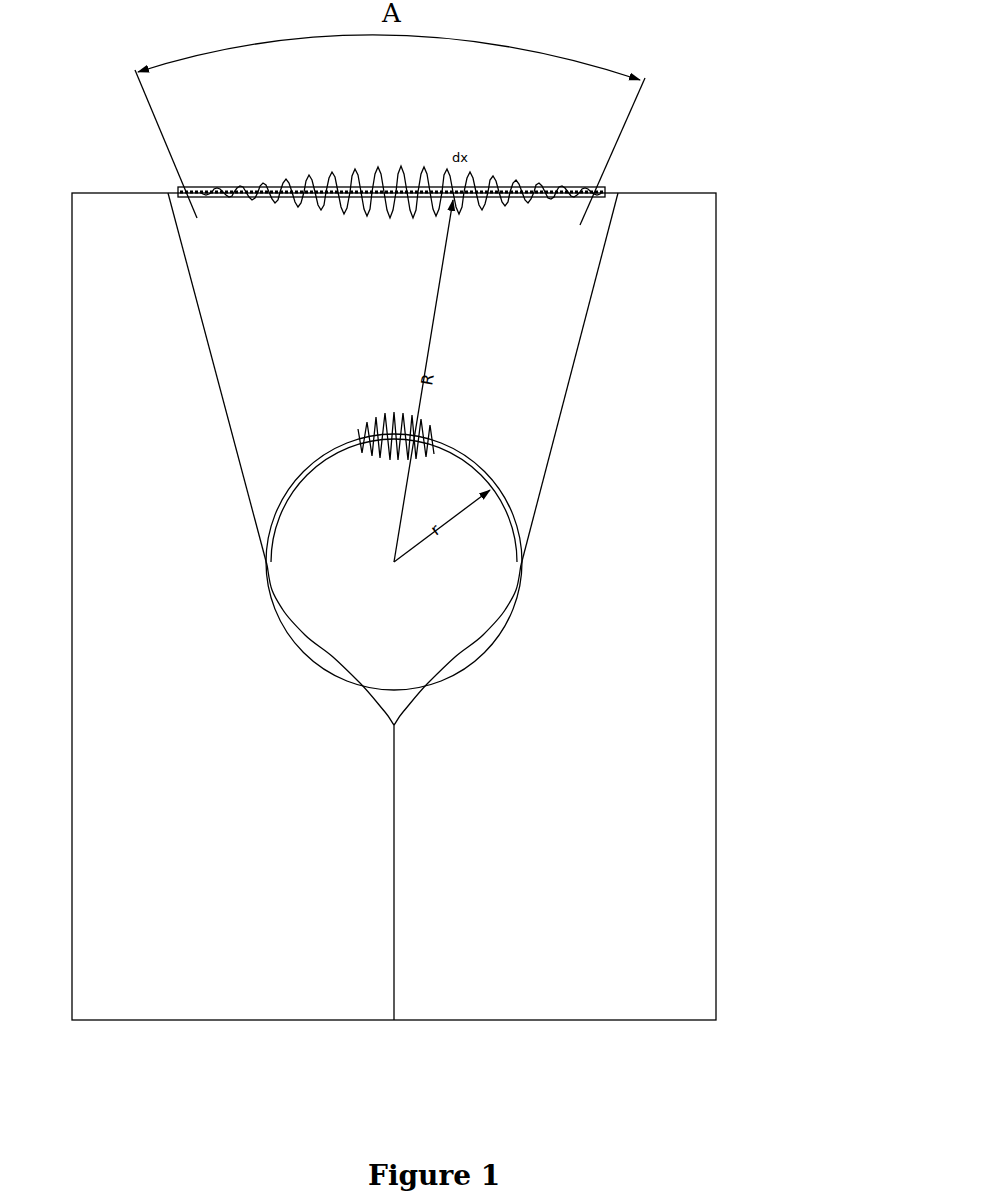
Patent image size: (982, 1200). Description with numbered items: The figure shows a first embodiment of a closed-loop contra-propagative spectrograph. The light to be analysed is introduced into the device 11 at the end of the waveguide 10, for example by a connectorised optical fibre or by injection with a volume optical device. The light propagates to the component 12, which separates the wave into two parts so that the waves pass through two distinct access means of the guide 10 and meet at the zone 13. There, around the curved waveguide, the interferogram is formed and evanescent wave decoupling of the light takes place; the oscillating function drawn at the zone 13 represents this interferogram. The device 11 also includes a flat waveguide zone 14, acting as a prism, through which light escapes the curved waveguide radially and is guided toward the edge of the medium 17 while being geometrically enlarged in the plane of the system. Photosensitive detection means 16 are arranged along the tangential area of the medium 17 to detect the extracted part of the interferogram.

The waveguide 10 is at (403, 1023).
The device 11 is at (718, 991).
The component 12 is at (401, 728).
The interference zone 13 is at (437, 452).
The flat waveguide zone 14 is at (513, 385).
The photosensitive detection means 16 is at (603, 182).
The medium 17 is at (334, 171).